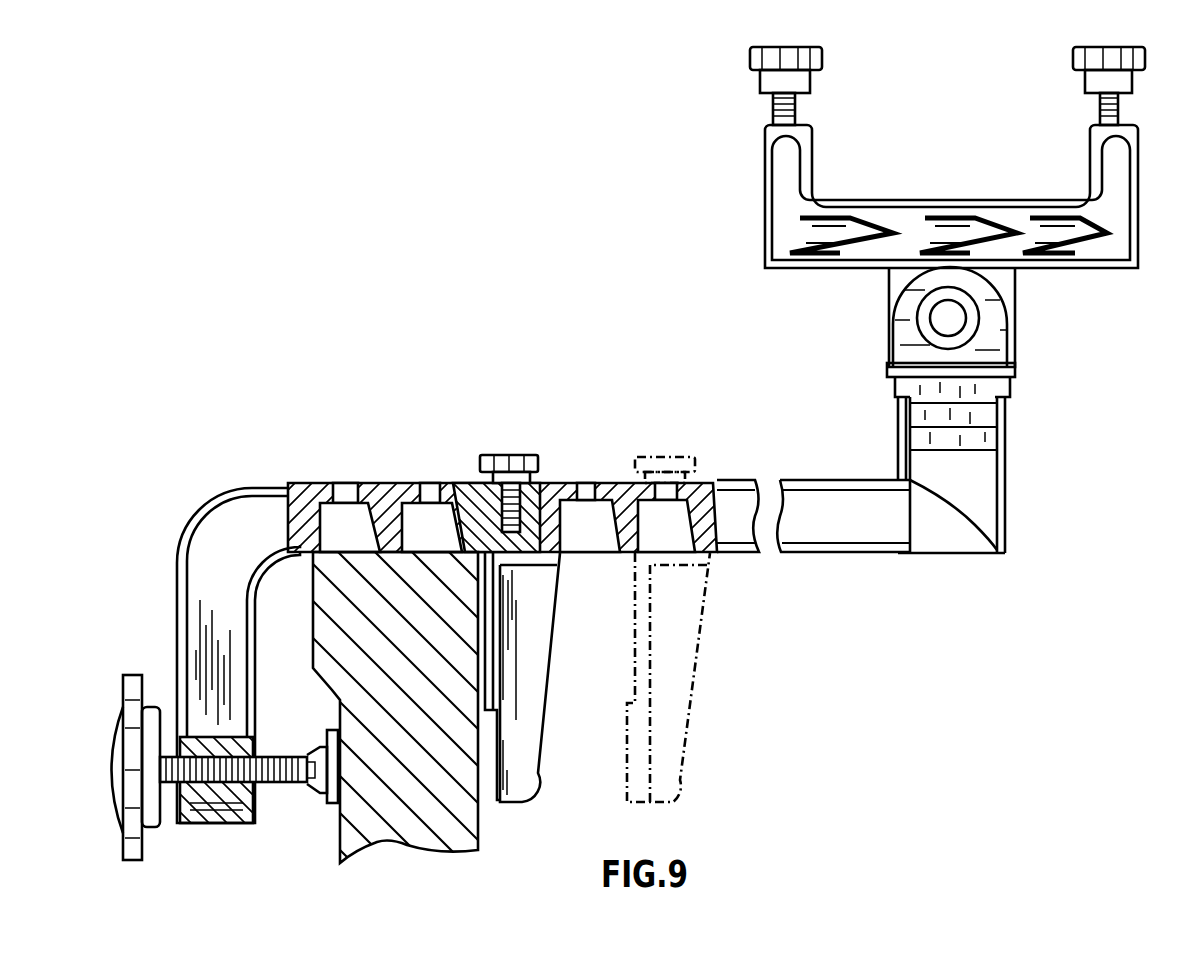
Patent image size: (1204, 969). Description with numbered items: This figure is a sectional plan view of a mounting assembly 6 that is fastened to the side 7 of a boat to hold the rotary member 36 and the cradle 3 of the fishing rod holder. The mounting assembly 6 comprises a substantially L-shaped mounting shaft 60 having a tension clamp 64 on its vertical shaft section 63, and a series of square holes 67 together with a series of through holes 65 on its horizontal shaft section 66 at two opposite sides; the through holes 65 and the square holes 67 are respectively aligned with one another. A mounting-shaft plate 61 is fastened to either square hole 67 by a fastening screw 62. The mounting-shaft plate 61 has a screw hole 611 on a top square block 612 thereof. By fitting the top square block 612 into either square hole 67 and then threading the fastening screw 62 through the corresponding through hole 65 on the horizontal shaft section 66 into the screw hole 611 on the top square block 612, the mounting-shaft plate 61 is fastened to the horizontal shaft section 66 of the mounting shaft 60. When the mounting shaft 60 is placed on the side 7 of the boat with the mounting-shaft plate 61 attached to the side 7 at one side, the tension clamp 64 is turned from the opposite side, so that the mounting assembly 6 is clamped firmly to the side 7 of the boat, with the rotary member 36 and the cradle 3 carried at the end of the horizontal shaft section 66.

The cradle 3 is at (1138, 165).
The rotary member 36 is at (1005, 315).
The mounting shaft 60 is at (757, 482).
The mounting assembly 6 is at (254, 480).
The side of a boat 7 is at (372, 585).
The screw hole 611 is at (456, 483).
The top square block 612 is at (538, 483).
The fastening screw 62 is at (504, 455).
The through hole 65 is at (590, 483).
The horizontal shaft section 66 is at (620, 483).
The square hole 67 is at (593, 555).
The mounting-shaft plate 61 is at (525, 672).
The vertical shaft section 63 is at (178, 640).
The tension clamp 64 is at (275, 785).